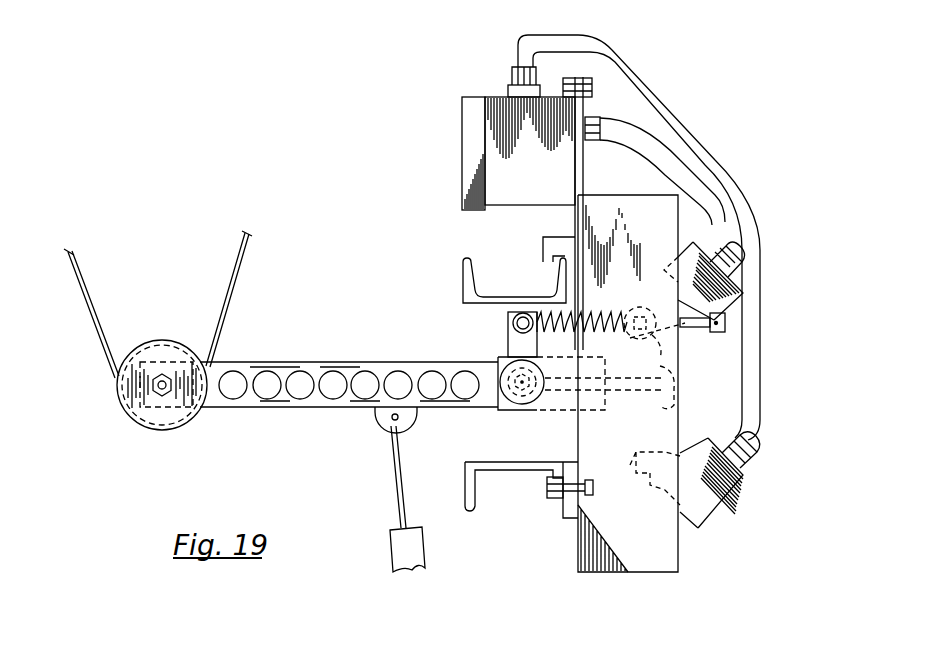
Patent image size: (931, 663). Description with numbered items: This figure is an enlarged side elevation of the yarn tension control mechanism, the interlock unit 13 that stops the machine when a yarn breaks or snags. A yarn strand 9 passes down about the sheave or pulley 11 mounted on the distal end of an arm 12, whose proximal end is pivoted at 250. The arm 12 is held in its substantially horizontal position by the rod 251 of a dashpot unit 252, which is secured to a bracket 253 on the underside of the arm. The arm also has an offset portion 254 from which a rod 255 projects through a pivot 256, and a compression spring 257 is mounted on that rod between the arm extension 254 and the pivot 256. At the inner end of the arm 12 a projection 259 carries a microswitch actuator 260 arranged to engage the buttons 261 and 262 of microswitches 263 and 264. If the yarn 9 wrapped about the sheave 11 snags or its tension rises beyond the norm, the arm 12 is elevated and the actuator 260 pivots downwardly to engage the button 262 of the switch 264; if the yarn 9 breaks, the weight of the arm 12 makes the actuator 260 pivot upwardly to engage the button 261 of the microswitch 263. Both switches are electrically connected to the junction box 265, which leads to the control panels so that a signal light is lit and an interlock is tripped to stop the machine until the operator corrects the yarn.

The yarn strand 9 is at (236, 286).
The pulley 11 is at (172, 418).
The arm 12 is at (320, 398).
The interlock unit 13 is at (492, 250).
The pivot 250 is at (522, 390).
The rod 251 is at (407, 495).
The dashpot unit 252 is at (422, 553).
The bracket 253 is at (410, 420).
The offset portion 254 is at (507, 348).
The rod 255 is at (690, 330).
The pivot 256 is at (662, 340).
The compression spring 257 is at (618, 310).
The projection 259 is at (628, 392).
The microswitch actuator 260 is at (672, 408).
The button 261 is at (636, 304).
The button 262 is at (655, 452).
The microswitch 263 is at (693, 255).
The microswitch 264 is at (700, 512).
The junction box 265 is at (560, 176).